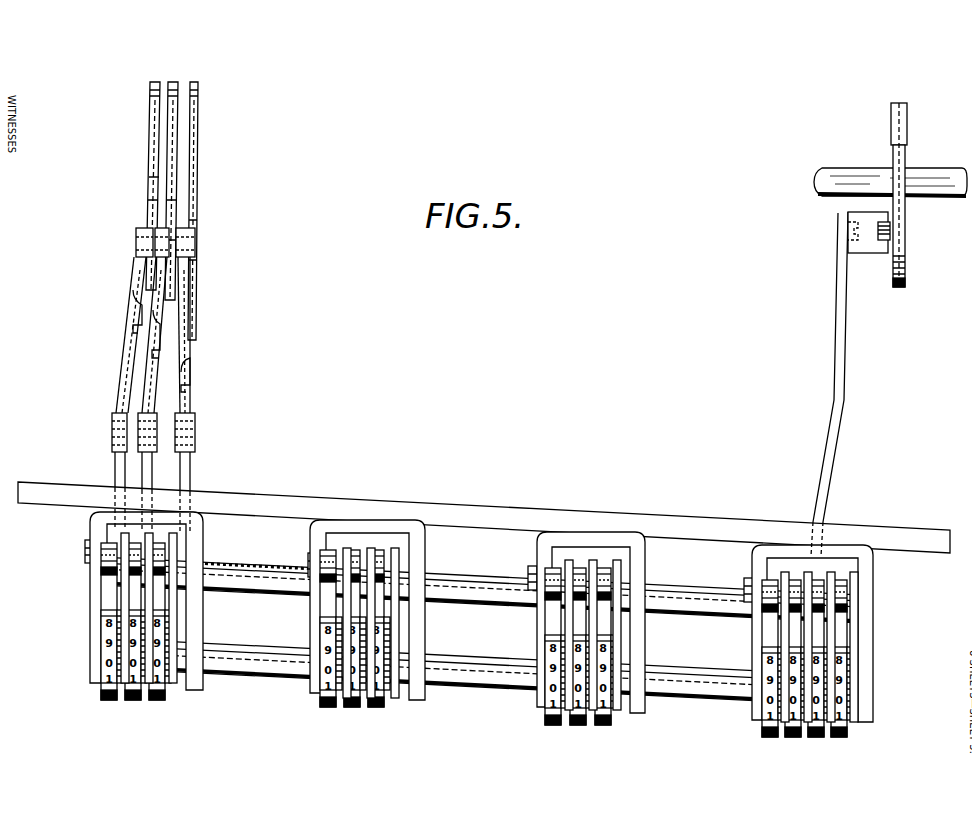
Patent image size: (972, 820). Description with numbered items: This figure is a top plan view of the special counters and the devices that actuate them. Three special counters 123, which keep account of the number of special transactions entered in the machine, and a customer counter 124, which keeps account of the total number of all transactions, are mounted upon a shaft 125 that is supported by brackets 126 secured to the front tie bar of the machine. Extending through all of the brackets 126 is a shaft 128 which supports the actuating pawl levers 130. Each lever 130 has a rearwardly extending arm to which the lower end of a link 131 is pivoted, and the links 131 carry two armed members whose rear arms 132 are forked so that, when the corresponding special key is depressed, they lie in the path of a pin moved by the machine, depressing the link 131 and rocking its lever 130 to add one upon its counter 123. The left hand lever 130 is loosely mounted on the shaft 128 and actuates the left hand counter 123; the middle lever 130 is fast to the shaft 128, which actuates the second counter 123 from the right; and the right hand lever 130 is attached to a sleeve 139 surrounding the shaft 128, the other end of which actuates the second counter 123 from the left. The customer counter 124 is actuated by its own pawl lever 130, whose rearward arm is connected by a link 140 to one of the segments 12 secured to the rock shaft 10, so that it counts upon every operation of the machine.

The rock shaft 10 is at (921, 171).
The segment 12 is at (905, 272).
The special counter 123 is at (325, 700).
The customer counter 124 is at (792, 737).
The shaft 125 is at (451, 683).
The bracket 126 is at (416, 622).
The shaft 128 is at (710, 592).
The actuating pawl lever 130 is at (185, 463).
The link 131 is at (133, 395).
The rear arm 132 is at (160, 84).
The sleeve 139 is at (278, 563).
The link 140 is at (868, 254).